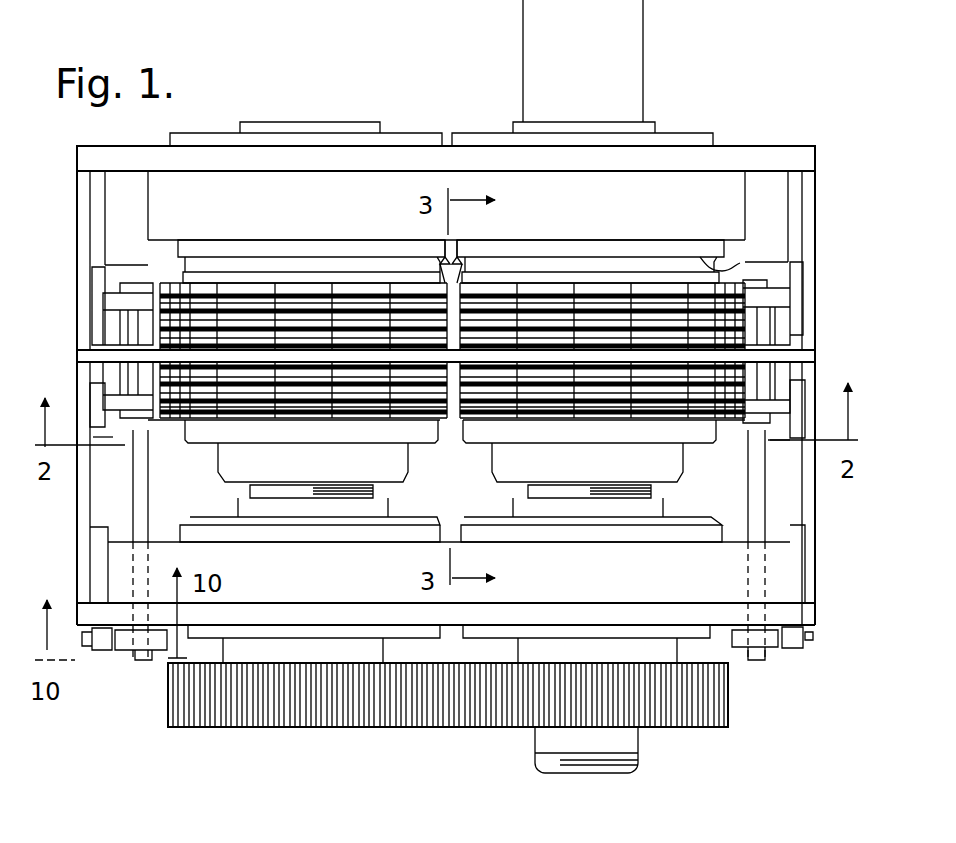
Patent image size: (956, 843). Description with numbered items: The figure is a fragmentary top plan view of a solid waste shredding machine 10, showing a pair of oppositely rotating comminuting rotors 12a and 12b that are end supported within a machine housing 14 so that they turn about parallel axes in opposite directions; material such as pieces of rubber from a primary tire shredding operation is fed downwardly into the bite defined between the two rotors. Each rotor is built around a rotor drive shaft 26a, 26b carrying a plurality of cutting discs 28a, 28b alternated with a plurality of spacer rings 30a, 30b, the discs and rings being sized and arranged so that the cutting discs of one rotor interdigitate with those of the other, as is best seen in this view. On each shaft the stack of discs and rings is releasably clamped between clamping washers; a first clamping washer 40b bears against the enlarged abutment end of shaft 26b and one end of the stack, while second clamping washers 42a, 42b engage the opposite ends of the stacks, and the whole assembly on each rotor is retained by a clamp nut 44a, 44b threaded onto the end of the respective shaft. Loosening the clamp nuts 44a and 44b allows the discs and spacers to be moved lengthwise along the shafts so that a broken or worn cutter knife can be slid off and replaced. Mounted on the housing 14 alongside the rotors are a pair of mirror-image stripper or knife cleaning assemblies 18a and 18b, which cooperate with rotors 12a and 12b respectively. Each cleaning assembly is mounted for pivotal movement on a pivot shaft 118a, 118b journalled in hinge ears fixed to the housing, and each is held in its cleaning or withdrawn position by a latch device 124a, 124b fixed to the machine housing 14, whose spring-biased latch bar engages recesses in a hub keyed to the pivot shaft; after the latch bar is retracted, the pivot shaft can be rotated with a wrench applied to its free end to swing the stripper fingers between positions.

The shredding machine 10 is at (428, 98).
The machine housing 14 is at (115, 146).
The comminuting rotor 12a is at (287, 230).
The comminuting rotor 12b is at (600, 230).
The cutting discs 28a is at (163, 288).
The cutting discs 28b is at (730, 273).
The spacer rings 30a is at (328, 294).
The spacer rings 30b is at (543, 294).
The first clamping washer 40b is at (727, 239).
The second clamping washer 42a is at (183, 423).
The second clamping washer 42b is at (453, 427).
The clamp nut 44a is at (223, 458).
The clamp nut 44b is at (490, 462).
The rotor drive shaft 26a is at (248, 490).
The rotor drive shaft 26b is at (525, 490).
The stripper cleaning assembly 18a is at (113, 432).
The stripper cleaning assembly 18b is at (778, 424).
The pivot shaft 118a is at (130, 506).
The pivot shaft 118b is at (747, 481).
The latch device 124a is at (100, 650).
The latch device 124b is at (795, 650).